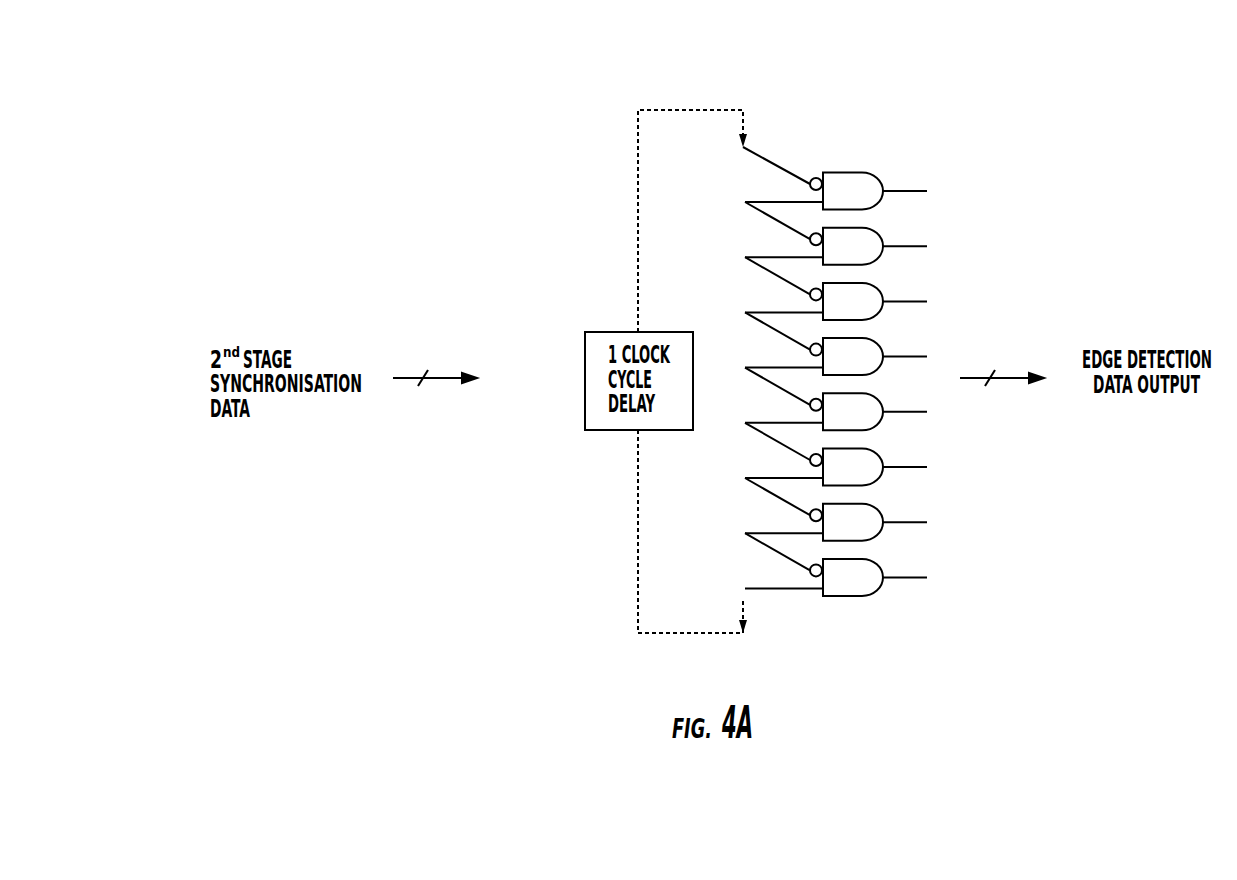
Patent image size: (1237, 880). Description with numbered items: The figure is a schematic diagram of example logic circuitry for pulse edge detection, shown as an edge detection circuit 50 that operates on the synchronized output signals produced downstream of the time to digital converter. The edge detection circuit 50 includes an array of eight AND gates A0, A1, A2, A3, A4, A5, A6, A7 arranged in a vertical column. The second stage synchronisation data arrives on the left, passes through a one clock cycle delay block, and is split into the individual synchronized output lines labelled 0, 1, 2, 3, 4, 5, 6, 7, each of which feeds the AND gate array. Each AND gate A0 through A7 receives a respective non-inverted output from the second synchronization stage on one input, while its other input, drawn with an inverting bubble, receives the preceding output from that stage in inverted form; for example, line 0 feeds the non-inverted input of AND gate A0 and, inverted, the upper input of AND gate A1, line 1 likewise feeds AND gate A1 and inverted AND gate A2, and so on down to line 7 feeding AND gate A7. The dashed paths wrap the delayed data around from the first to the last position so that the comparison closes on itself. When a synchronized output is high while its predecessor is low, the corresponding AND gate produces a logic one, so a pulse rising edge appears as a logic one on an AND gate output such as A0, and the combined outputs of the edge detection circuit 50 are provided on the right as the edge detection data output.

The edge detection circuit 50 is at (892, 134).
The AND gate A0 is at (868, 191).
The AND gate A1 is at (868, 246).
The AND gate A2 is at (868, 301).
The AND gate A3 is at (868, 356).
The AND gate A4 is at (868, 411).
The AND gate A5 is at (868, 467).
The AND gate A6 is at (868, 522).
The AND gate A7 is at (868, 577).
The input data line 0 is at (775, 211).
The input data line 1 is at (775, 266).
The input data line 2 is at (775, 321).
The input data line 3 is at (775, 377).
The input data line 4 is at (775, 432).
The input data line 5 is at (775, 487).
The input data line 6 is at (775, 542).
The input data line 7 is at (775, 584).